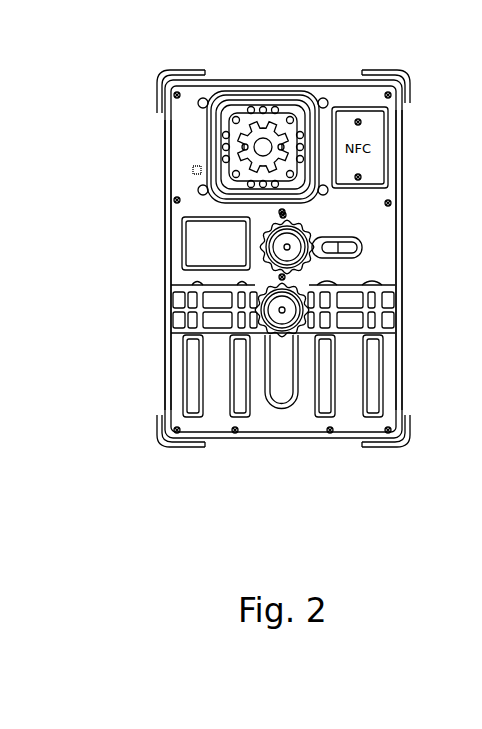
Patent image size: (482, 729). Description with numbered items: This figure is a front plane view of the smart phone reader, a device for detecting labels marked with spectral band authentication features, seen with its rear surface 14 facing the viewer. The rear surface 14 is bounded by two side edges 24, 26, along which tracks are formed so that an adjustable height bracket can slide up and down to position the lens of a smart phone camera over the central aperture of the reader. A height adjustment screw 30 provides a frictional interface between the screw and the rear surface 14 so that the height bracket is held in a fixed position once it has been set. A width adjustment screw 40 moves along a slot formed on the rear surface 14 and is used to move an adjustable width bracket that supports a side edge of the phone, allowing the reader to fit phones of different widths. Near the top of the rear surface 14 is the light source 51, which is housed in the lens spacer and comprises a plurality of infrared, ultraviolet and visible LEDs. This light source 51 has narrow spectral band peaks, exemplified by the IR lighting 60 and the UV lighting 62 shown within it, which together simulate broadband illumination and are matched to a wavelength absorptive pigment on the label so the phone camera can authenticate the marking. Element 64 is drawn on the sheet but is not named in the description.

The rear surface 14 is at (268, 224).
The side edge 24 is at (163, 373).
The side edge 26 is at (403, 382).
The height adjustment screw 30 is at (262, 297).
The width adjustment screw 40 is at (187, 200).
The light source 51 is at (312, 88).
The IR lighting 60 is at (283, 110).
The UV lighting 62 is at (241, 120).
The gear 64 is at (247, 142).